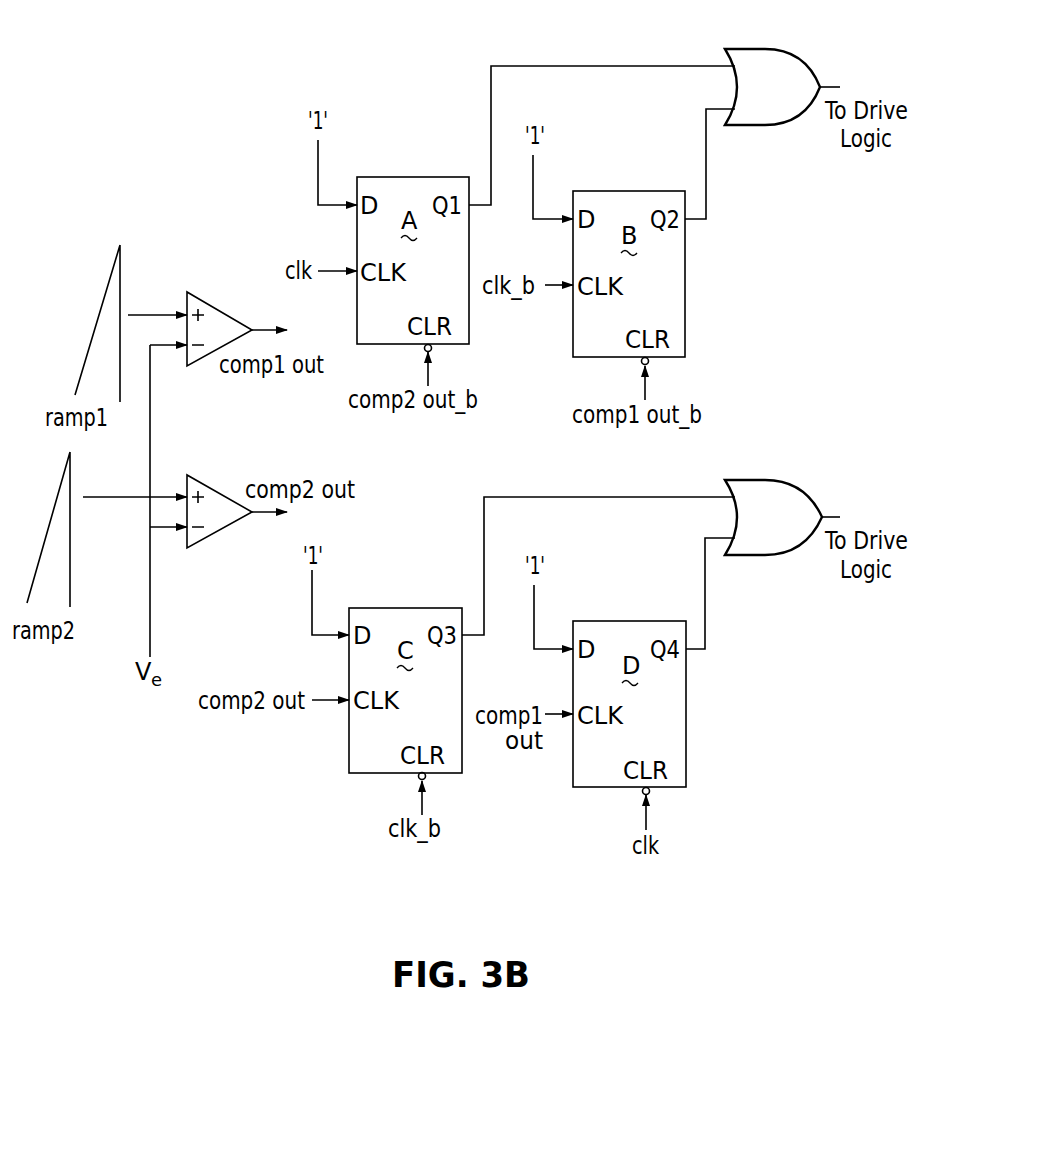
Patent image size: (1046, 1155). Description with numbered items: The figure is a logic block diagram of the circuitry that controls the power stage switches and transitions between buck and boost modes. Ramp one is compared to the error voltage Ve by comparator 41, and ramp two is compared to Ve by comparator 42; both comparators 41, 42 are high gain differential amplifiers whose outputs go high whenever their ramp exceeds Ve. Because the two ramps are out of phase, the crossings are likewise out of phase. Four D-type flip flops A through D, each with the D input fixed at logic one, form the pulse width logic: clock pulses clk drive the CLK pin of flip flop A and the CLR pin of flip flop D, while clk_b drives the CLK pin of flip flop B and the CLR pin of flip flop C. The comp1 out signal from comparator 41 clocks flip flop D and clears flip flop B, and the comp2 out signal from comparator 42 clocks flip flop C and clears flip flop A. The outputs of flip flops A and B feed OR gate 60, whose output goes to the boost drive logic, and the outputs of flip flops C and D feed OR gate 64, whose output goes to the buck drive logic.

The comparator 41 is at (232, 319).
The comparator 42 is at (216, 491).
The OR gate 60 is at (801, 52).
The OR gate 64 is at (800, 486).